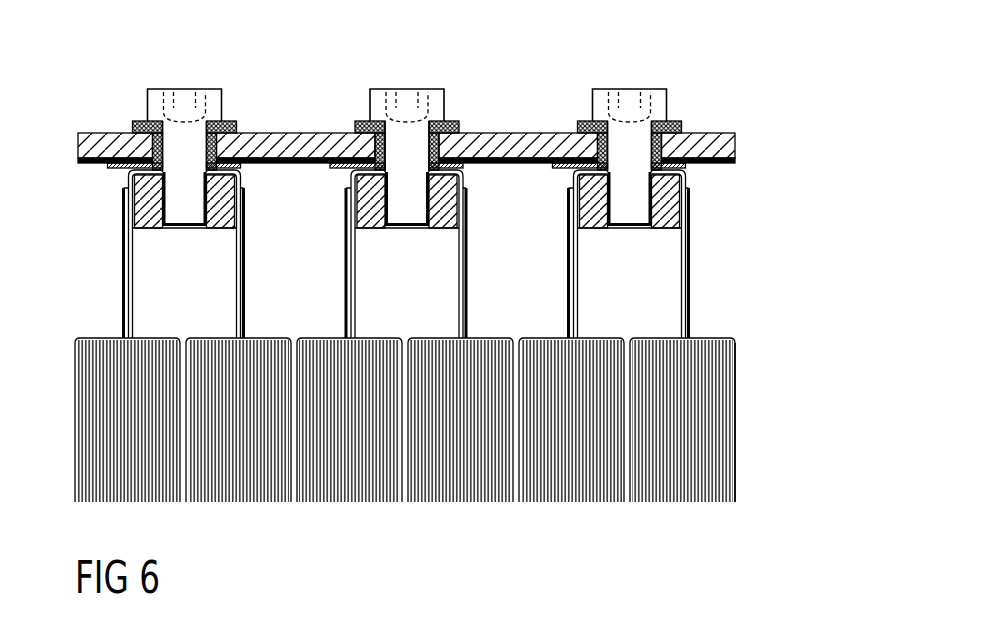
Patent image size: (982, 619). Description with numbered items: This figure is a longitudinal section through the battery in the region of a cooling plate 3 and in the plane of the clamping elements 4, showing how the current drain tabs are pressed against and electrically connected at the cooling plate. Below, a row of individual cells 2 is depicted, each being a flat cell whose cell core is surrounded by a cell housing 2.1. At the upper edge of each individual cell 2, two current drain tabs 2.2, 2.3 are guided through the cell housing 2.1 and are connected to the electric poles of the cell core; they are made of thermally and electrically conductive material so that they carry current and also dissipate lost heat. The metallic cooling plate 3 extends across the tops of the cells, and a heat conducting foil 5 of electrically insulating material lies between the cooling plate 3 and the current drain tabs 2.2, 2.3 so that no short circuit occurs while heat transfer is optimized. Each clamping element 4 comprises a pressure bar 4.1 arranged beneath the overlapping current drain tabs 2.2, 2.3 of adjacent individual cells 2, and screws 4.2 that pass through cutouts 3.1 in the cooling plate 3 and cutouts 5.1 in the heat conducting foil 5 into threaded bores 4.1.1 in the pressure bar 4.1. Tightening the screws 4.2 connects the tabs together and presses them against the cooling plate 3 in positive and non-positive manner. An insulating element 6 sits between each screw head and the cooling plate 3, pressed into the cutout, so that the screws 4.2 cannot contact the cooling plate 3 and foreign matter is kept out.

The individual cell 2 is at (710, 370).
The cell housing 2.1 is at (737, 440).
The current drain tab 2.2 is at (240, 175).
The current drain tab 2.3 is at (123, 183).
The cooling plate 3 is at (268, 140).
The cutout 3.1 is at (600, 147).
The clamping element 4 is at (660, 102).
The pressure bar 4.1 is at (133, 230).
The threaded bore 4.1.1 is at (162, 210).
The screw 4.2 is at (188, 108).
The heat conducting foil 5 is at (307, 160).
The cutout 5.1 is at (683, 177).
The insulating element 6 is at (452, 124).